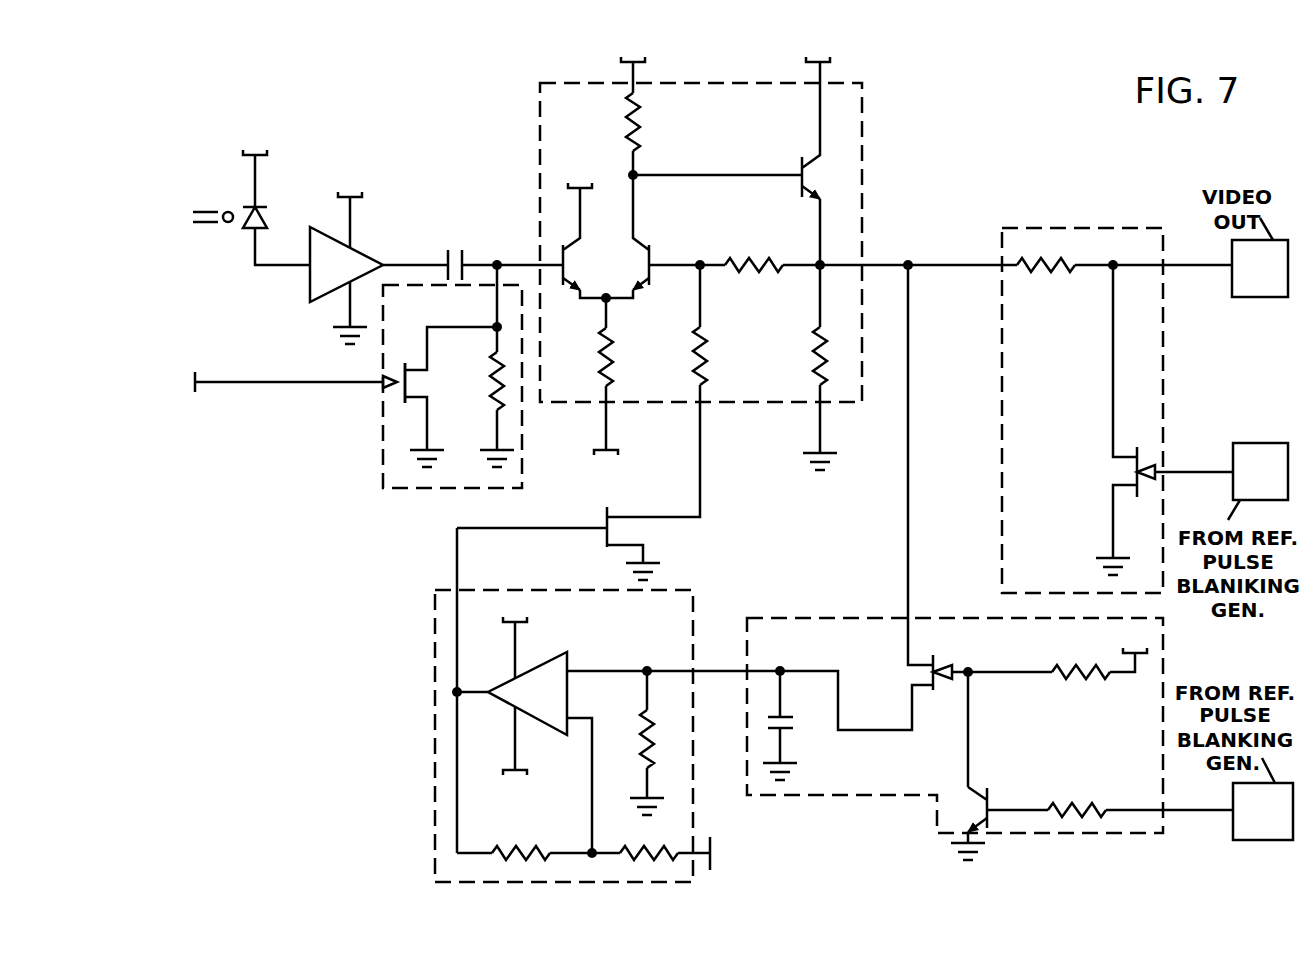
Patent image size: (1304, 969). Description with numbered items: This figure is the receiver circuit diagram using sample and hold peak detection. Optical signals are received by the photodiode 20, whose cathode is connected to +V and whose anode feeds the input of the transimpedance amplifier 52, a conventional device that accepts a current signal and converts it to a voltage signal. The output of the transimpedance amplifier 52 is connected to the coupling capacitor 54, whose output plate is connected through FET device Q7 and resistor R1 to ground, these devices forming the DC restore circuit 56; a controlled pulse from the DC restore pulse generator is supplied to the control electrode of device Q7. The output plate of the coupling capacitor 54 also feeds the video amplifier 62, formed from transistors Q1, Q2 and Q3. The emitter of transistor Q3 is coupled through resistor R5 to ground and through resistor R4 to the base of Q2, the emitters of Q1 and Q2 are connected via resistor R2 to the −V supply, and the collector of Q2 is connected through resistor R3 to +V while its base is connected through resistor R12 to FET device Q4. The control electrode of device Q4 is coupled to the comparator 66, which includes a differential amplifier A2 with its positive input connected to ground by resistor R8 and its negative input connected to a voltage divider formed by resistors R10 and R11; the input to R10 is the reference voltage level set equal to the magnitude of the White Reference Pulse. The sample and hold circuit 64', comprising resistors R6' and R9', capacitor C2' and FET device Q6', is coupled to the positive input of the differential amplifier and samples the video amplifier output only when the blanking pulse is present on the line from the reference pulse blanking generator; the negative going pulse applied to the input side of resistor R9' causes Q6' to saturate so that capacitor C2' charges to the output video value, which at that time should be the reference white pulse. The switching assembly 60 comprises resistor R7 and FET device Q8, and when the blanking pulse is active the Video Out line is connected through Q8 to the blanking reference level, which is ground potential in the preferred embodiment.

The photodiode 20 is at (246, 231).
The transimpedance amplifier 52 is at (367, 253).
The coupling capacitor 54 is at (463, 250).
The DC restore circuit 56 is at (346, 389).
The video amplifier 62 is at (775, 272).
The switching assembly 60 is at (1113, 370).
The sample and hold circuit 64' is at (940, 710).
The comparator 66 is at (540, 705).
The transistor Q1 is at (585, 230).
The transistor Q2 is at (646, 258).
The transistor Q3 is at (829, 150).
The FET device Q4 is at (568, 543).
The FET device Q6' is at (920, 672).
The FET device Q7 is at (432, 383).
The FET device Q8 is at (1157, 420).
The resistor R1 is at (491, 391).
The resistor R2 is at (628, 393).
The resistor R3 is at (647, 101).
The resistor R4 is at (760, 251).
The resistor R5 is at (804, 367).
The resistor R7 is at (1124, 252).
The resistor R8 is at (659, 743).
The resistor R10 is at (651, 845).
The resistor R11 is at (524, 839).
The resistor R12 is at (679, 391).
The resistor R6' is at (1060, 669).
The resistor R9' is at (1140, 796).
The capacitor C2' is at (796, 725).
The differential amplifier A2 is at (549, 690).